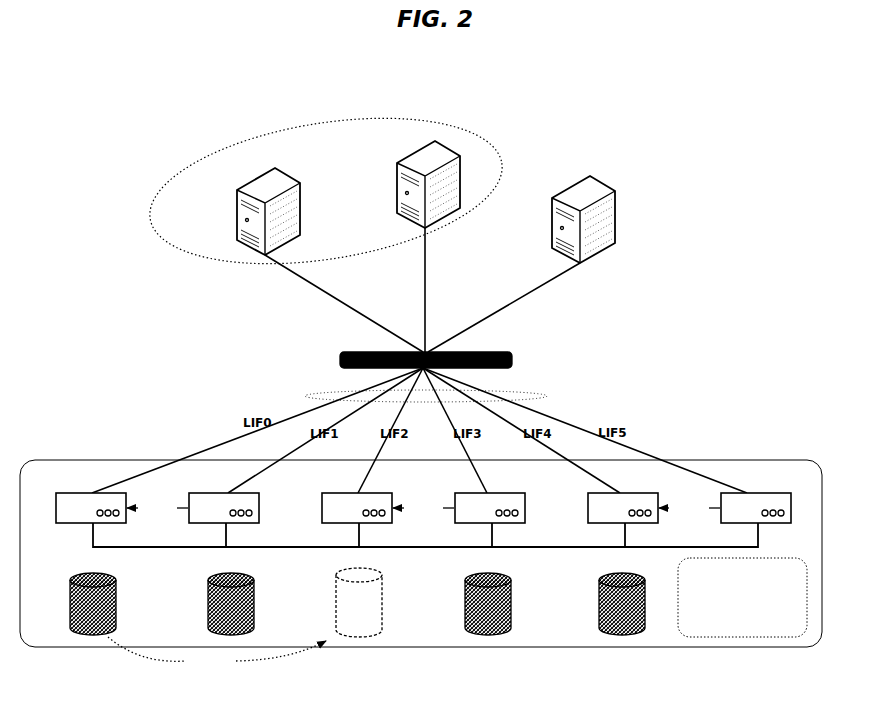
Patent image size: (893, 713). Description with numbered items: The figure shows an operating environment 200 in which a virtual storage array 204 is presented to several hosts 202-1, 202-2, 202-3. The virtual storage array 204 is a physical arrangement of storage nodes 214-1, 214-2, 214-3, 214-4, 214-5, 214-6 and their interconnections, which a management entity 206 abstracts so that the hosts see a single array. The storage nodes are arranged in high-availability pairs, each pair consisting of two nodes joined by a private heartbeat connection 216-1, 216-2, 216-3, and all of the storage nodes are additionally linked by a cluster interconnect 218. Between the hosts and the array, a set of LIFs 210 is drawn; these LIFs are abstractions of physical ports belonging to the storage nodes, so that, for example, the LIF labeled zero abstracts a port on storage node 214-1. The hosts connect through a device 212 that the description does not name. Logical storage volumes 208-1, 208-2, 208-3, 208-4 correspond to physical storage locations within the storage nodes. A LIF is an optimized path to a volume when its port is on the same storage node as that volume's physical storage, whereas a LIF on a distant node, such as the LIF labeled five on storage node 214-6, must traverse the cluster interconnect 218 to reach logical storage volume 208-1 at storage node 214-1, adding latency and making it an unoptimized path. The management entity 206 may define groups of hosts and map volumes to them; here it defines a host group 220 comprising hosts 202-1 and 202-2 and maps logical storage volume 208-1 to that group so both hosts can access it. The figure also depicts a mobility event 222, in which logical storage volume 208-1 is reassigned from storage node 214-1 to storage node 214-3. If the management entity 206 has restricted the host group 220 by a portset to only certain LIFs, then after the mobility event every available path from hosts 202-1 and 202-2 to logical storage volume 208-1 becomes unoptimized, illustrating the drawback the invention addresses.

The operating environment 200 is at (158, 161).
The host 202-1 is at (320, 254).
The host 202-2 is at (415, 241).
The host 202-3 is at (521, 259).
The host group 220 is at (166, 257).
The network switch 212 is at (522, 352).
The LIF 210 is at (304, 390).
The virtual storage array 204 is at (106, 444).
The storage node 214-1 is at (77, 503).
The storage node 214-2 is at (210, 503).
The storage node 214-3 is at (344, 503).
The storage node 214-4 is at (510, 503).
The storage node 214-5 is at (634, 503).
The storage node 214-6 is at (769, 503).
The private heartbeat connection 216-1 is at (157, 510).
The private heartbeat connection 216-2 is at (423, 510).
The private heartbeat connection 216-3 is at (689, 510).
The cluster interconnect 218 is at (322, 551).
The logical storage volume 208-1 is at (226, 602).
The logical storage volume 208-2 is at (231, 604).
The logical storage volume 208-3 is at (488, 604).
The logical storage volume 208-4 is at (622, 604).
The mobility event 222 is at (217, 655).
The management entity 206 is at (742, 597).